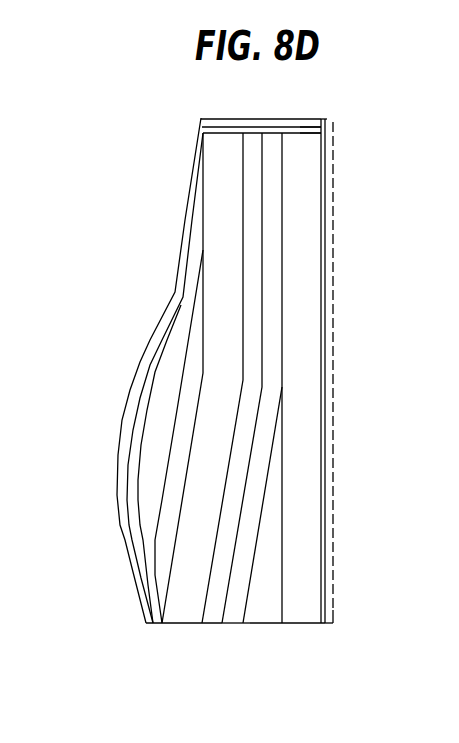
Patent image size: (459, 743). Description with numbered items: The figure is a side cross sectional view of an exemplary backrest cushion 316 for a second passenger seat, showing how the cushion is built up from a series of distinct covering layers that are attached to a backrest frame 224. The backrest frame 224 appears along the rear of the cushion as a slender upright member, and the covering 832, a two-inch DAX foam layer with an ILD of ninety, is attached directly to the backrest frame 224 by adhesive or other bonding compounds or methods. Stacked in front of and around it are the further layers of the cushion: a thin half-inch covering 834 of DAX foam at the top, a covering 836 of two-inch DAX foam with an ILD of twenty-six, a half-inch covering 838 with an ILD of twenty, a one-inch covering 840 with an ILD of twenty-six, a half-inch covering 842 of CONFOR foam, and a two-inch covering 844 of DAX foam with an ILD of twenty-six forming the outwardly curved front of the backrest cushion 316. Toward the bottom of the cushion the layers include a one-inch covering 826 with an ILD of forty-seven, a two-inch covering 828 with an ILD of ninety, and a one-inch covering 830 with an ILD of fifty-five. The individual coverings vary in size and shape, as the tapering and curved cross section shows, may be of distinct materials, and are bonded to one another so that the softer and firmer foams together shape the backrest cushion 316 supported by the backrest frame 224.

The backrest frame 224 is at (335, 222).
The backrest cushion 316 is at (86, 423).
The covering 826 is at (212, 624).
The covering 828 is at (263, 624).
The covering 830 is at (230, 624).
The covering 832 is at (302, 130).
The covering 834 is at (210, 117).
The covering 836 is at (202, 198).
The covering 838 is at (167, 305).
The covering 840 is at (182, 368).
The covering 842 is at (142, 398).
The covering 844 is at (137, 505).